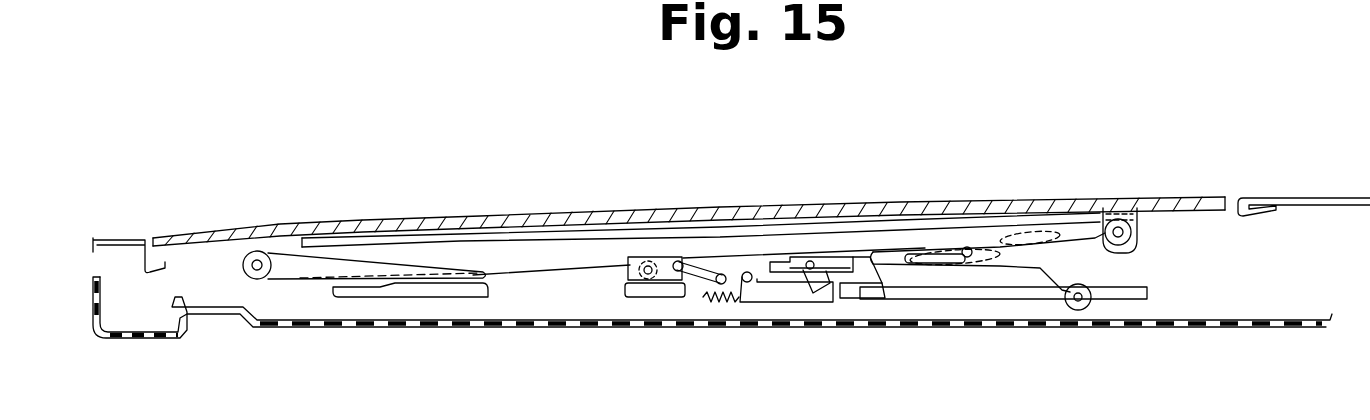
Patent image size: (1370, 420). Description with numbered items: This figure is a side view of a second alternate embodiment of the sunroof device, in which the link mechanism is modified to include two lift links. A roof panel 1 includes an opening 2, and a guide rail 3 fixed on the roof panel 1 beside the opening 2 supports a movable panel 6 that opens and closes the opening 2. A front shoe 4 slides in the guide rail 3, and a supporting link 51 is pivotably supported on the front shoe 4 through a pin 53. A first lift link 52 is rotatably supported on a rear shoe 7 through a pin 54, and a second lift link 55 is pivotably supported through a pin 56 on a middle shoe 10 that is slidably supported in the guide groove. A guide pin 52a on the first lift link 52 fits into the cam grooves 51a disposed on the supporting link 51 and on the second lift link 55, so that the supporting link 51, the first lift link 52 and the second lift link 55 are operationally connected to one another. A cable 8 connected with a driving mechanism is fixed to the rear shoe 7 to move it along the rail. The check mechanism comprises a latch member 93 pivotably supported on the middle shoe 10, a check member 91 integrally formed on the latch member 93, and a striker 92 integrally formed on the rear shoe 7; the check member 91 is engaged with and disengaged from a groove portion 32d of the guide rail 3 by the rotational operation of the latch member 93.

The roof panel 1 is at (1250, 198).
The opening 2 is at (152, 266).
The guide rail 3 is at (779, 258).
The front shoe 4 is at (366, 292).
The movable panel 6 is at (1064, 205).
The rear shoe 7 is at (1130, 293).
The cable 8 is at (714, 302).
The middle shoe 10 is at (723, 270).
The groove portion 32d is at (813, 257).
The supporting link 51 is at (536, 246).
The cam groove 51a is at (963, 247).
The first lift link 52 is at (1032, 290).
The guide pin 52a is at (1020, 150).
The pin 53 is at (258, 260).
The pin 54 is at (1092, 300).
The second lift link 55 is at (866, 249).
The pin 56 is at (648, 276).
The check member 91 is at (810, 290).
The striker 92 is at (749, 283).
The latch member 93 is at (832, 284).